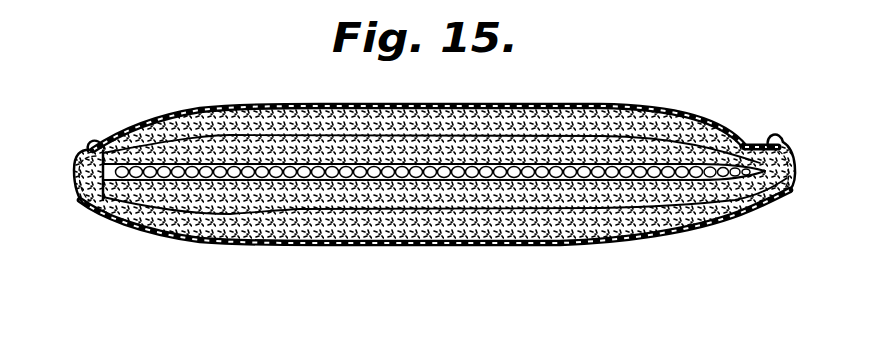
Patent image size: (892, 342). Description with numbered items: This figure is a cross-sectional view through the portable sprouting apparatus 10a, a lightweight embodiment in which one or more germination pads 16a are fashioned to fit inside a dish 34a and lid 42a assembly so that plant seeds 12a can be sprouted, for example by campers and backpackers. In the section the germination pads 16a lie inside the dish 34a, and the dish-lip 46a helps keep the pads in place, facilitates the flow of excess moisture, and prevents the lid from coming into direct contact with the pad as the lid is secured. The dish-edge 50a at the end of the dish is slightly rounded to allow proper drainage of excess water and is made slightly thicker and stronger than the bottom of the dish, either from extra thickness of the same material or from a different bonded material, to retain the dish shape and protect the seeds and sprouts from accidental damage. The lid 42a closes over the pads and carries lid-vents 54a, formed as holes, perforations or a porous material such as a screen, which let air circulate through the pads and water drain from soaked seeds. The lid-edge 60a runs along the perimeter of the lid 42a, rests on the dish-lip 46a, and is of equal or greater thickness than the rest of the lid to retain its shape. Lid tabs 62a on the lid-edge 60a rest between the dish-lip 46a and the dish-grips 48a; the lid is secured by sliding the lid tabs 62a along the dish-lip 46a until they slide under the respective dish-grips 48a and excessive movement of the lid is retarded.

The embodiment of the apparatus 10a is at (638, 103).
The plant seeds 12a is at (238, 178).
The germination pad 16a is at (282, 213).
The dish 34a is at (596, 251).
The lid 42a is at (558, 102).
The dish-lip 46a is at (103, 186).
The dish-grips 48a is at (89, 143).
The dish-edge 50a is at (793, 187).
The lid-vents 54a is at (683, 116).
The lid-edge 60a is at (116, 150).
The lid tabs 62a is at (103, 150).